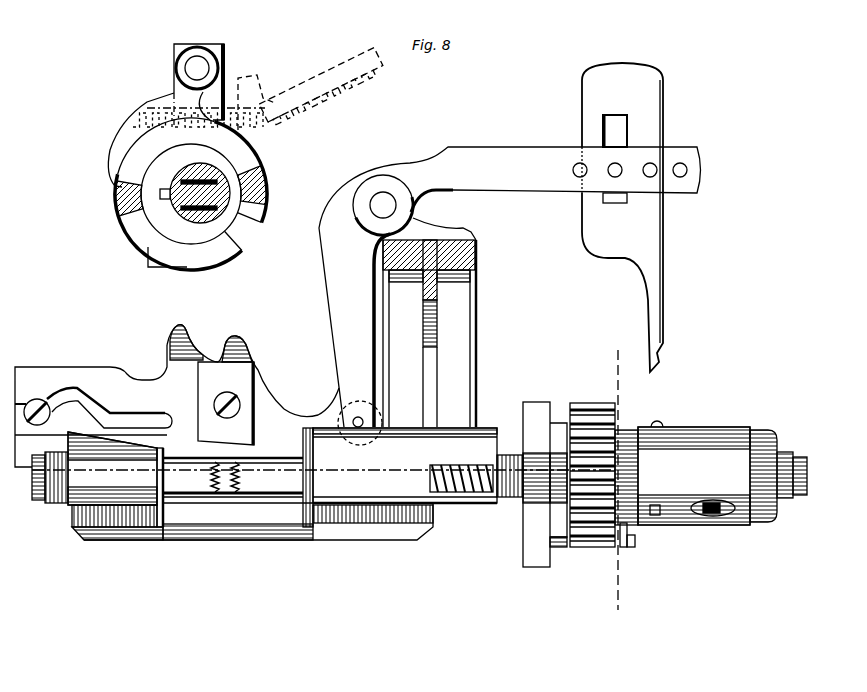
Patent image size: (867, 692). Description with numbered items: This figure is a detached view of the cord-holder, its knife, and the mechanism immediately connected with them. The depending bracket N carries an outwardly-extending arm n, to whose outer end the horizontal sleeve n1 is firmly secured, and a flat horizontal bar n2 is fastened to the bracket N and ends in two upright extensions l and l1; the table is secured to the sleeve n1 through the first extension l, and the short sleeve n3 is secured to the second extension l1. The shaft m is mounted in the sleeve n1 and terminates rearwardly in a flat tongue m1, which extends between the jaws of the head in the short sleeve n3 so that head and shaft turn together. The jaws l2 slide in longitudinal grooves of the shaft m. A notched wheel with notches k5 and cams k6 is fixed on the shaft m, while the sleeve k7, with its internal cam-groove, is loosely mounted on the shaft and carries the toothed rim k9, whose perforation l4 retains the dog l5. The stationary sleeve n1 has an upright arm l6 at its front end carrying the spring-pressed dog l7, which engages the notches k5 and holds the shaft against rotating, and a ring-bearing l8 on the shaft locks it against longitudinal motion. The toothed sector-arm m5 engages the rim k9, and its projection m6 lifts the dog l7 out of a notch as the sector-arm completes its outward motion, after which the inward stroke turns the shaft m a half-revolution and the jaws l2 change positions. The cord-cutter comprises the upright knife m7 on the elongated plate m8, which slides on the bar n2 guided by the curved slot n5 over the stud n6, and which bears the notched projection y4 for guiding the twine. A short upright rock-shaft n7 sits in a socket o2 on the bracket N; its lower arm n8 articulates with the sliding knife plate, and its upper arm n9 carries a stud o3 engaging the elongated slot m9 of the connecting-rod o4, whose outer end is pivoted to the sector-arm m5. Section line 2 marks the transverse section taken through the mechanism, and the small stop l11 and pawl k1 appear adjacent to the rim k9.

The sector-arm m5 is at (148, 99).
The perforation l4 is at (470, 463).
The shoulder or projection m6 is at (311, 83).
The notches k5 is at (263, 210).
The collar or rim k9 is at (680, 462).
The cams k6 is at (150, 258).
The jaws l2 is at (201, 165).
The shaft m is at (222, 183).
The socket o2 is at (368, 186).
The rock-shaft n7 is at (383, 205).
The arm n9 is at (510, 187).
The stud or pin o3 is at (622, 172).
The connecting-rod o4 is at (622, 217).
The elongated slot m9 is at (624, 128).
The section line 2 is at (626, 478).
The depending bracket N is at (476, 258).
The outwardly-extending arm n is at (439, 333).
The arm n8 is at (338, 327).
The elongated flat plate m8 is at (95, 406).
The notched projection y4 is at (202, 338).
The ring-bearing l8 is at (311, 426).
The stud n6 is at (39, 398).
The curved slot n5 is at (109, 408).
The knife m7 is at (232, 441).
The short sleeve n3 is at (97, 479).
The upright extension l1 is at (127, 535).
The flat horizontal bar n2 is at (233, 477).
The upright extension l is at (362, 532).
The flat tongue m1 is at (240, 478).
The sleeve n1 is at (405, 465).
The upright arm l6 is at (510, 500).
The spring-pressed dog l7 is at (524, 562).
The sleeve k7 is at (601, 475).
The collar k1 is at (626, 477).
The dog l5 is at (624, 548).
The stop l11 is at (636, 543).